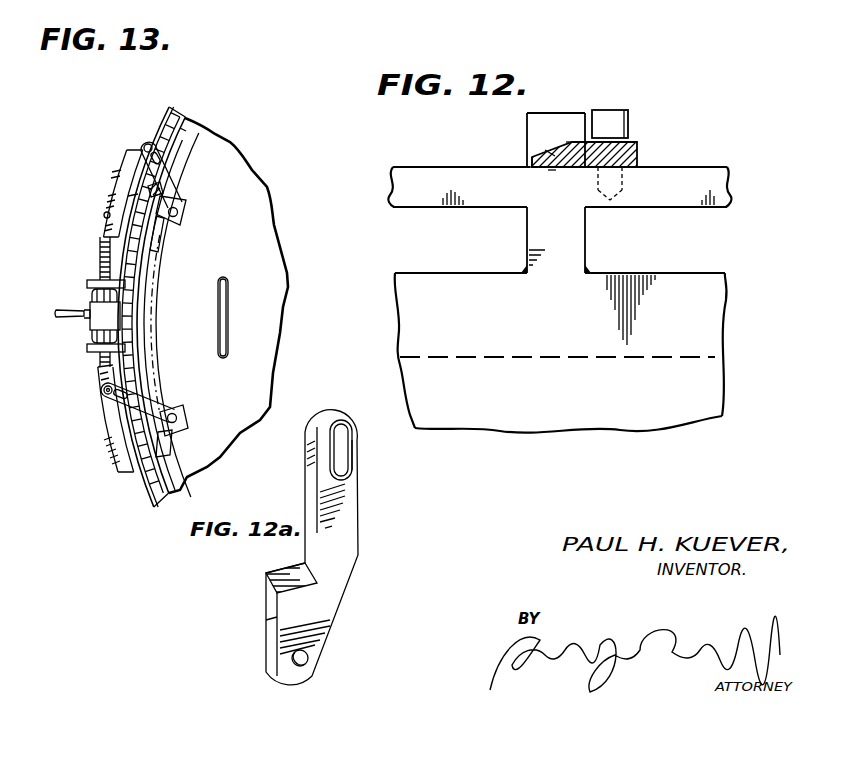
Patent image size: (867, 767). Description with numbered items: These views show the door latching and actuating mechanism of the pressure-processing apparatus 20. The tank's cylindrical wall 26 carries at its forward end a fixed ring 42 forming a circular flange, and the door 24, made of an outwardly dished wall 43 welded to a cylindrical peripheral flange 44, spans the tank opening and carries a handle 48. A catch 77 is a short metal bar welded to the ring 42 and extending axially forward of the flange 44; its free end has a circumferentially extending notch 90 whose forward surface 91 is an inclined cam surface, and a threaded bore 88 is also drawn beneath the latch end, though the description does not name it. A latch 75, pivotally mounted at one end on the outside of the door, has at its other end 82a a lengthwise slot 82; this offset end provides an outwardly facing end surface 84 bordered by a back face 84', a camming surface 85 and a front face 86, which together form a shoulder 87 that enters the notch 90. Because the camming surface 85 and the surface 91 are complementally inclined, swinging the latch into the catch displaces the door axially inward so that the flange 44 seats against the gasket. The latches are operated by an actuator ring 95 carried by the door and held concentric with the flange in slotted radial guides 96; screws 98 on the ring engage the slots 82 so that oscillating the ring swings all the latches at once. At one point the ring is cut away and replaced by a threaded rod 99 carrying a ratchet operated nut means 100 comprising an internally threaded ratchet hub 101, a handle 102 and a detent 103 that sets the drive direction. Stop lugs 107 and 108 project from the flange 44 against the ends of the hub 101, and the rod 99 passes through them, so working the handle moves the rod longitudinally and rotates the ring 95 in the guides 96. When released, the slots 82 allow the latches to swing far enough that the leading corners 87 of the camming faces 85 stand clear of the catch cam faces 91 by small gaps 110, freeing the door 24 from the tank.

In FIG. 13, the pressure-processing apparatus 20 is at (66, 147).
In FIG. 13, the door 24 is at (248, 262).
In FIG. 13, the cylindrical circumferential wall 26 is at (197, 133).
In FIG. 12, the cylindrical circumferential wall 26 is at (698, 282).
In FIG. 13, the fixed ring 42 is at (183, 135).
In FIG. 13, the outwardly dished wall 43 is at (252, 176).
In FIG. 13, the cylindrical peripheral flange 44 is at (203, 135).
In FIG. 13, the handle 48 is at (224, 308).
In FIG. 13, the latch 75 is at (173, 192).
In FIG. 12, the latch 75 is at (637, 150).
In FIG. 12A, the latch 75 is at (368, 556).
In FIG. 13, the catch 77 is at (135, 192).
In FIG. 12, the catch 77 is at (573, 251).
In FIG. 13, the slot 82 is at (106, 392).
In FIG. 12A, the slot 82 is at (340, 423).
In FIG. 13, the slotted end of latch 82a is at (146, 140).
In FIG. 12A, the slotted end of latch 82a is at (357, 460).
In FIG. 12A, the outwardly facing end surface 84 is at (282, 572).
In FIG. 12, the back face 84' is at (549, 198).
In FIG. 13, the camming surface 85 is at (165, 202).
In FIG. 12, the camming surface 85 is at (570, 142).
In FIG. 12A, the camming surface 85 is at (295, 583).
In FIG. 13, the front face 86 is at (158, 232).
In FIG. 12, the front face 86 is at (530, 160).
In FIG. 12A, the front face 86 is at (270, 640).
In FIG. 13, the shoulder 87 is at (140, 428).
In FIG. 12A, the shoulder 87 is at (268, 600).
In FIG. 12, the threaded bore 88 is at (603, 160).
In FIG. 12, the notch 90 is at (532, 167).
In FIG. 12, the forward surface of notch 91 is at (550, 153).
In FIG. 13, the actuator ring 95 is at (118, 192).
In FIG. 12, the actuator ring 95 is at (703, 172).
In FIG. 13, the guide 96 is at (104, 215).
In FIG. 12, the screw 98 is at (623, 118).
In FIG. 13, the threaded rod 99 is at (100, 259).
In FIG. 13, the ratchet operated nut means 100 is at (72, 292).
In FIG. 13, the ratchet hub 101 is at (90, 330).
In FIG. 13, the handle 102 is at (56, 314).
In FIG. 13, the detent 103 is at (90, 323).
In FIG. 13, the stop lug 107 is at (92, 353).
In FIG. 13, the stop lug 108 is at (88, 281).
In FIG. 13, the gap 110 is at (144, 150).